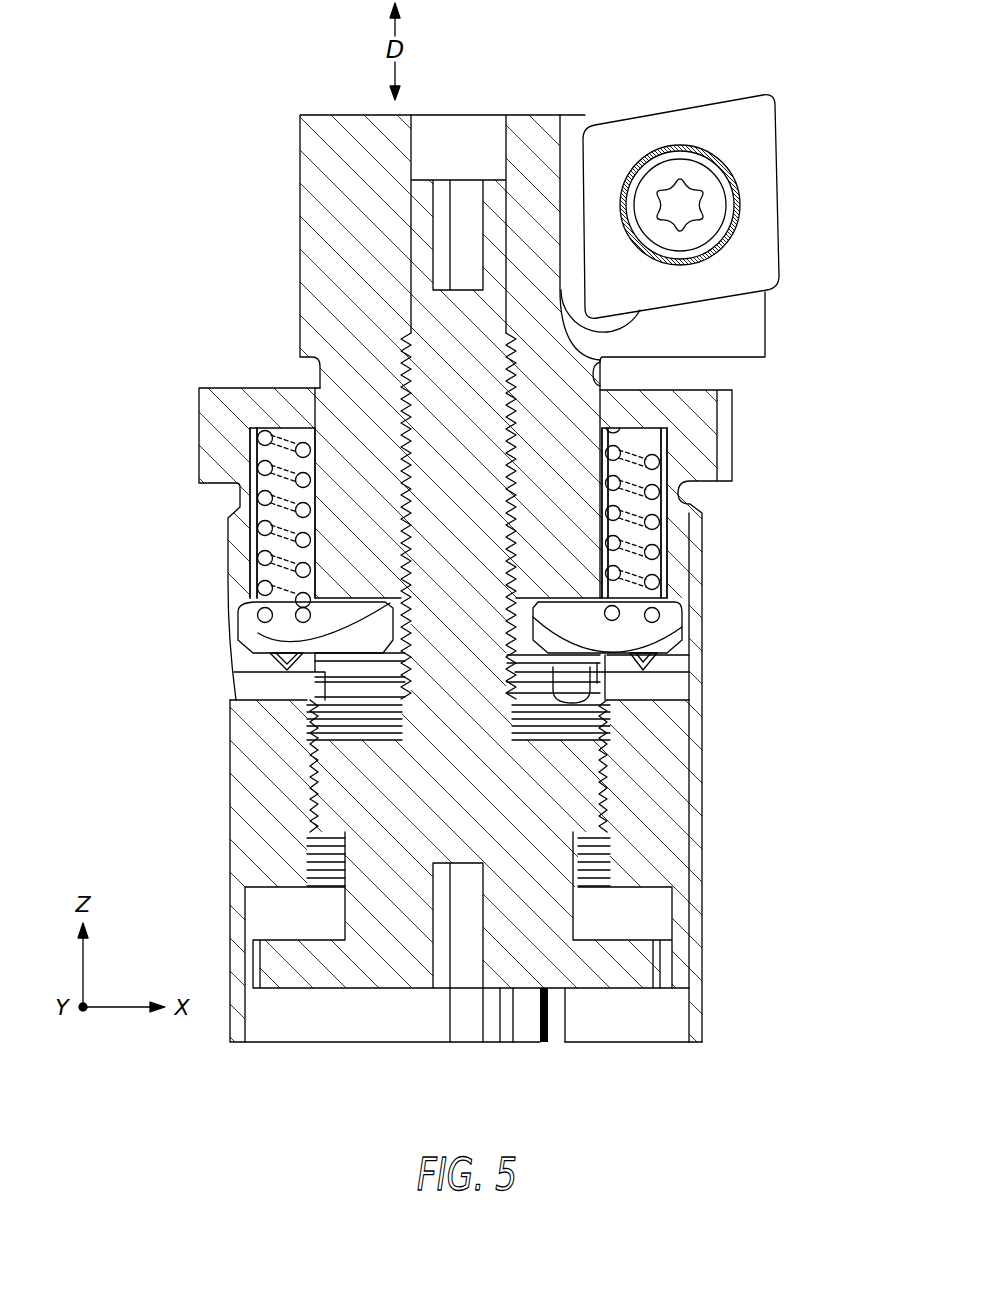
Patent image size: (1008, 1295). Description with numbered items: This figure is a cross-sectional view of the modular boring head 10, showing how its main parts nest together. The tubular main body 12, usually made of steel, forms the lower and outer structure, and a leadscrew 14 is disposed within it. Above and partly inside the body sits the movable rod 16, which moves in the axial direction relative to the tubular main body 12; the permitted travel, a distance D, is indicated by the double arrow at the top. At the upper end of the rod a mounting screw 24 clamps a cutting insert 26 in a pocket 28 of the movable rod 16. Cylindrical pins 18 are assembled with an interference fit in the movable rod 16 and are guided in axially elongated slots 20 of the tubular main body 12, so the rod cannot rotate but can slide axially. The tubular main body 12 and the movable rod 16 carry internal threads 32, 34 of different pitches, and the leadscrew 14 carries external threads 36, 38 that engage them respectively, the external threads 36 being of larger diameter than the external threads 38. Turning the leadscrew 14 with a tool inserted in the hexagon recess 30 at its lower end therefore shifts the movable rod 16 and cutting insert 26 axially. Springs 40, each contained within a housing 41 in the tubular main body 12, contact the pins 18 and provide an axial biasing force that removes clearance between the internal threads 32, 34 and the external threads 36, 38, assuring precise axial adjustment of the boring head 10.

The modular boring head 10 is at (205, 84).
The tubular main body 12 is at (215, 737).
The leadscrew 14 is at (622, 812).
The movable rod 16 is at (280, 210).
The cylindrical pins 18 is at (262, 635).
The axially elongated slots 20 is at (300, 657).
The mounting screw 24 is at (697, 180).
The cutting insert 26 is at (722, 125).
The pocket 28 is at (790, 297).
The hexagon recess 30 is at (470, 975).
The internal thread of the tubular main body 32 is at (320, 803).
The internal thread of the movable rod 34 is at (424, 478).
The external thread of the leadscrew 36 is at (607, 773).
The external thread of the leadscrew 38 is at (520, 458).
The springs 40 is at (283, 510).
The housing 41 is at (267, 457).